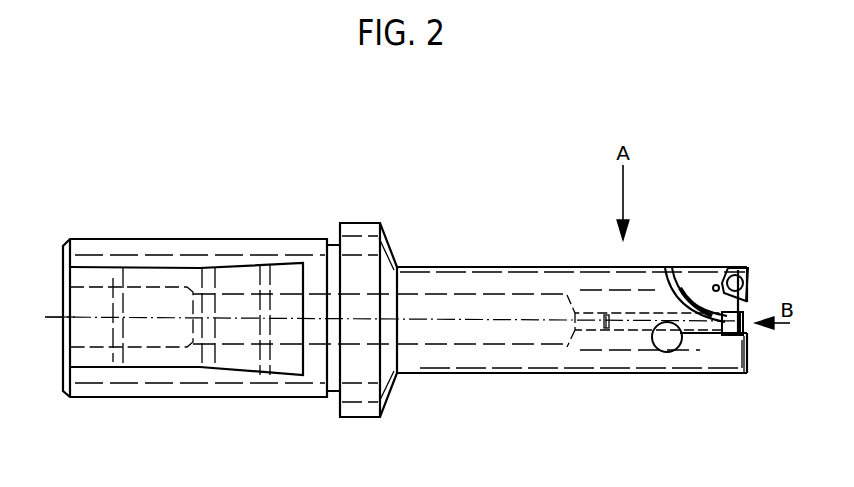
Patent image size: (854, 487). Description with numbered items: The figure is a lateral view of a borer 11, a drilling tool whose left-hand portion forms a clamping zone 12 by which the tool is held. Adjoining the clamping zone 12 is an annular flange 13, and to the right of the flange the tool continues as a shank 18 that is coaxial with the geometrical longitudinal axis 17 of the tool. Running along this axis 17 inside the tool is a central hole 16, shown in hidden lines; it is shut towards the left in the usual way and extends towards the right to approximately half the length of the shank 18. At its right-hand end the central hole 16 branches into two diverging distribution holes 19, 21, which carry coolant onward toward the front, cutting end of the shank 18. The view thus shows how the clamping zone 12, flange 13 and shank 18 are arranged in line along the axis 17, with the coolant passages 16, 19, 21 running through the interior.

The borer 11 is at (427, 181).
The clamping zone 12 is at (195, 239).
The annular flange 13 is at (350, 222).
The central hole 16 is at (428, 293).
The geometrical longitudinal axis 17 is at (63, 318).
The shank 18 is at (530, 374).
The distribution hole 19 is at (643, 290).
The distribution hole 21 is at (608, 352).